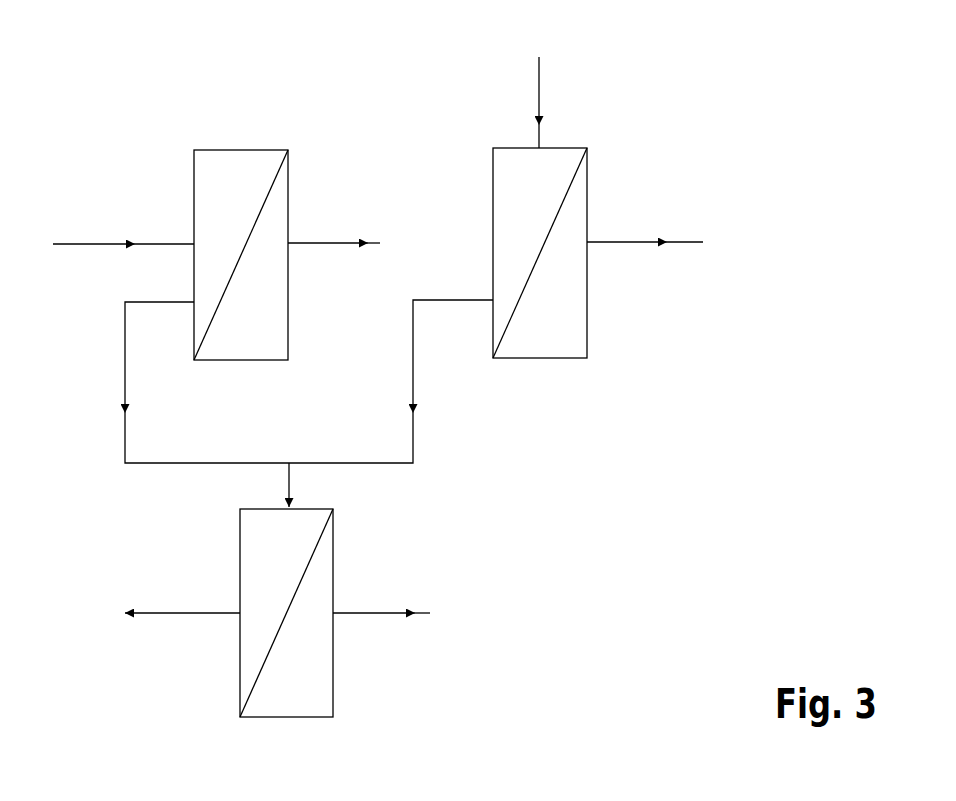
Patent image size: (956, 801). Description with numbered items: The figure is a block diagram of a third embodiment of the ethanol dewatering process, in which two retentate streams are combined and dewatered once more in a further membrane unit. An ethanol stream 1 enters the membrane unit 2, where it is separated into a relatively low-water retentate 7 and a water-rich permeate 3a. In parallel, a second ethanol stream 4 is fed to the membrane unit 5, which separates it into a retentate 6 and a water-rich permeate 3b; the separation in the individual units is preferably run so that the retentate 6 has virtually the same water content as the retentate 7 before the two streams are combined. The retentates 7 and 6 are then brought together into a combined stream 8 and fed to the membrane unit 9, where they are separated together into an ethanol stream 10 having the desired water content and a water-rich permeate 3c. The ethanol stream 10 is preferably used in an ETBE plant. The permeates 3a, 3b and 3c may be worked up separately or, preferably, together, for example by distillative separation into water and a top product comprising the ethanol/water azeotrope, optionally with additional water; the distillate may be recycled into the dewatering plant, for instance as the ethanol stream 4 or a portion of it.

The ethanol stream 1 is at (113, 244).
The membrane unit 2 is at (241, 255).
The water-rich permeate 3a is at (355, 241).
The water-rich permeate 3b is at (667, 239).
The water-rich permeate 3c is at (402, 609).
The ethanol stream 4 is at (538, 80).
The membrane unit 5 is at (540, 253).
The retentate 6 is at (391, 381).
The retentate 7 is at (174, 382).
The combined stream 8 is at (266, 484).
The membrane unit 9 is at (286, 613).
The ethanol stream 10 is at (139, 602).